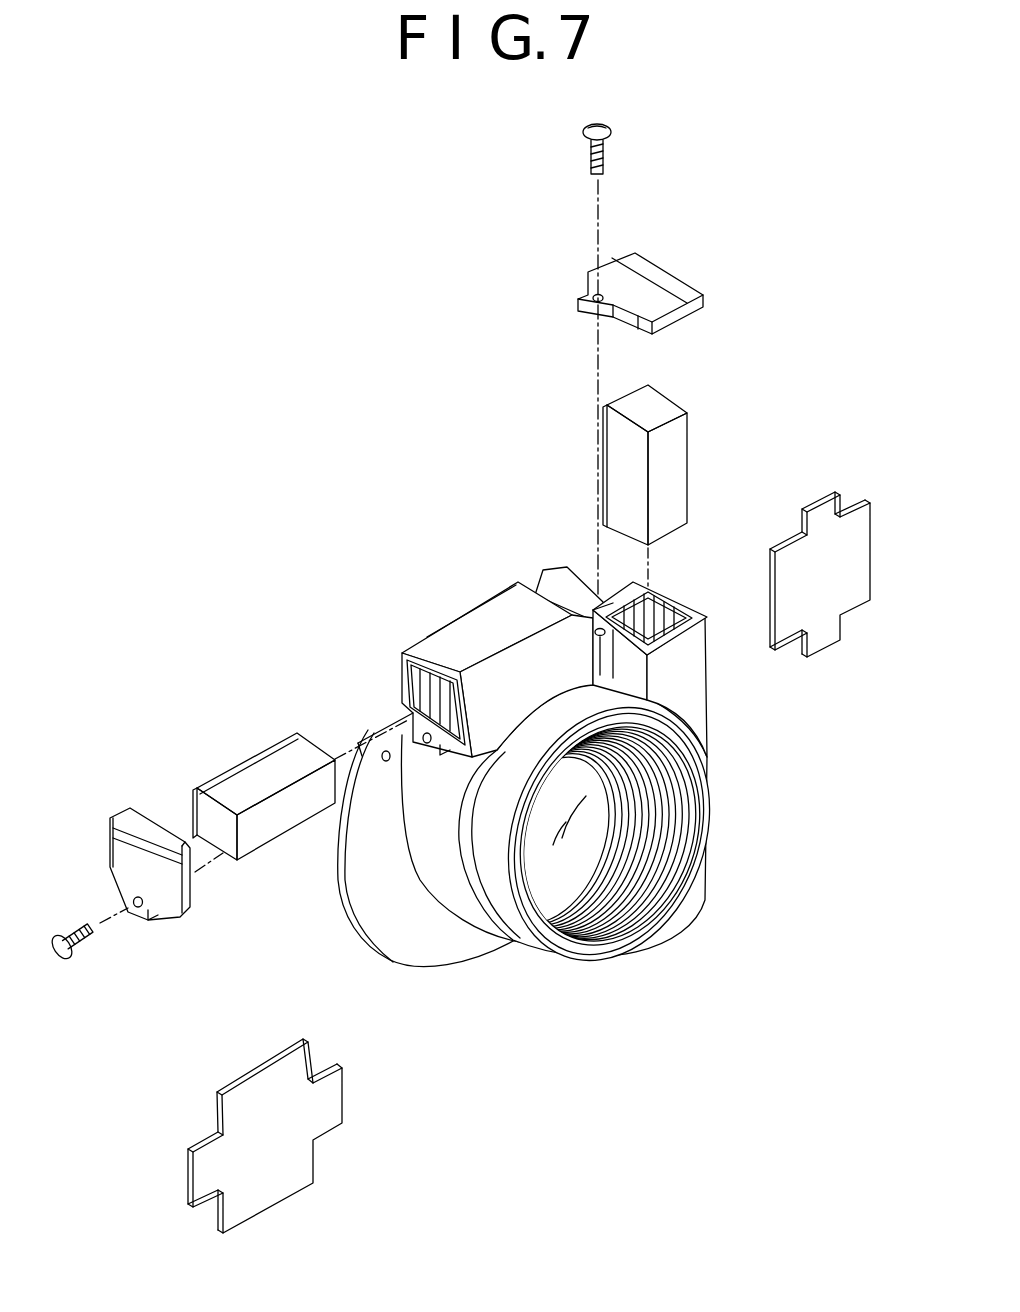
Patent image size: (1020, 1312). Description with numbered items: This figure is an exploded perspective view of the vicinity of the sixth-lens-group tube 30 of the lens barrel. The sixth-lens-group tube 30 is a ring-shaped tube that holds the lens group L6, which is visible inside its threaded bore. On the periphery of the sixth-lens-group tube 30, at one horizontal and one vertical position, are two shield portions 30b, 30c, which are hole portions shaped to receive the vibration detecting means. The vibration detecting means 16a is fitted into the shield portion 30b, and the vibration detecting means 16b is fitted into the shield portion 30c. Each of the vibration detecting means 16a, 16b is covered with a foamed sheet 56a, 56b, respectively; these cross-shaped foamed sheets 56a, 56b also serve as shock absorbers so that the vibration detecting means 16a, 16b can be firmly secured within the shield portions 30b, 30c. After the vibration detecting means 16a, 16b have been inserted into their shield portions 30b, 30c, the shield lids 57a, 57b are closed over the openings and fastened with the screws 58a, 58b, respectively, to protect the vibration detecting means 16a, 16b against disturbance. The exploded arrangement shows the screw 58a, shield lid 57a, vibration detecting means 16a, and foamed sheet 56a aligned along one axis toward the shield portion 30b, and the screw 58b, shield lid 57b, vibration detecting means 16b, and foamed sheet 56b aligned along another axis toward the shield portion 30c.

The sixth-lens-group tube 30 is at (558, 819).
The shield portion 30b is at (418, 681).
The shield portion 30c is at (696, 678).
The vibration detecting means 16a is at (282, 822).
The vibration detecting means 16b is at (678, 460).
The foamed sheet 56a is at (303, 1165).
The foamed sheet 56b is at (848, 598).
The shield lid 57a is at (167, 903).
The shield lid 57b is at (680, 284).
The screw 58a is at (65, 962).
The screw 58b is at (611, 132).
The lens group L6 is at (580, 779).